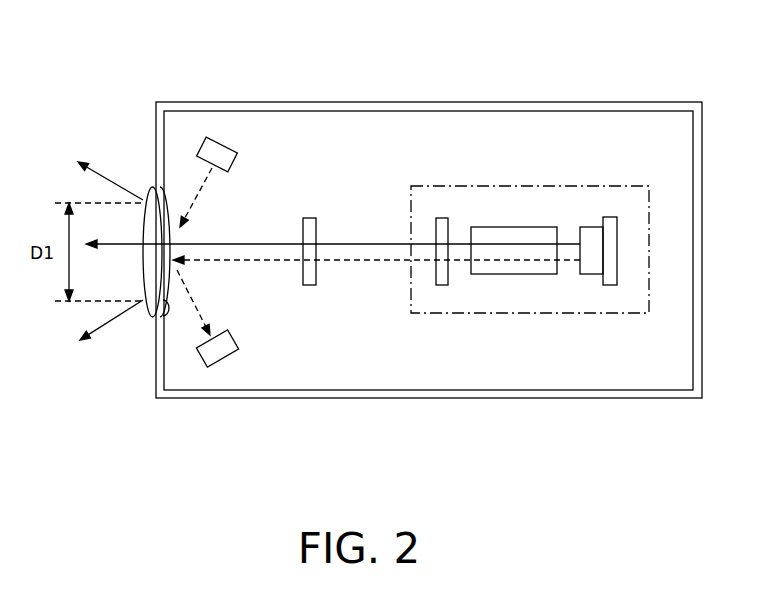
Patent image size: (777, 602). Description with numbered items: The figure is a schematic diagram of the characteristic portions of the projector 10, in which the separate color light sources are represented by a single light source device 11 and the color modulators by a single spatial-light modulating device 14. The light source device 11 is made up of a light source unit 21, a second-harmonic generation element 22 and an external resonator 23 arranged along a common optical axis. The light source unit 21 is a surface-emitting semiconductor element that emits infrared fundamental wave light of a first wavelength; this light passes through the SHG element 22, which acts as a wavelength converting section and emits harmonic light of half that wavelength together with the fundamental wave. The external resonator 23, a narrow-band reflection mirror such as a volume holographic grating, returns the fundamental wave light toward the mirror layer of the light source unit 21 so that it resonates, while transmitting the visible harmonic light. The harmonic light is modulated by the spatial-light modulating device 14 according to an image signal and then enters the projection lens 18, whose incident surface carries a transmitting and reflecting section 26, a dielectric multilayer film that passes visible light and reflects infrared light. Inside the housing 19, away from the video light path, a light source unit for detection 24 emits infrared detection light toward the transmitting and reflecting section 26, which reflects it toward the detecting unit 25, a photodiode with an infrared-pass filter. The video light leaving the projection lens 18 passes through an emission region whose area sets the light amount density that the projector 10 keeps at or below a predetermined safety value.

The projector 10 is at (173, 62).
The light source device 11 is at (614, 186).
The spatial-light modulating device 14 is at (310, 218).
The projection lens 18 is at (155, 188).
The housing 19 is at (658, 390).
The light source unit 21 is at (593, 274).
The second-harmonic generation element 22 is at (517, 274).
The external resonator 23 is at (443, 285).
The light source unit for detection 24 is at (232, 143).
The detecting unit 25 is at (232, 357).
The transmitting and reflecting section 26 is at (160, 317).